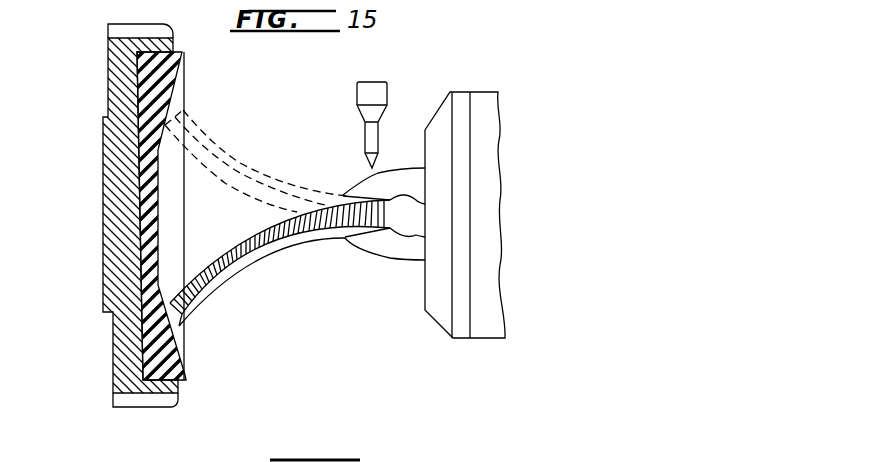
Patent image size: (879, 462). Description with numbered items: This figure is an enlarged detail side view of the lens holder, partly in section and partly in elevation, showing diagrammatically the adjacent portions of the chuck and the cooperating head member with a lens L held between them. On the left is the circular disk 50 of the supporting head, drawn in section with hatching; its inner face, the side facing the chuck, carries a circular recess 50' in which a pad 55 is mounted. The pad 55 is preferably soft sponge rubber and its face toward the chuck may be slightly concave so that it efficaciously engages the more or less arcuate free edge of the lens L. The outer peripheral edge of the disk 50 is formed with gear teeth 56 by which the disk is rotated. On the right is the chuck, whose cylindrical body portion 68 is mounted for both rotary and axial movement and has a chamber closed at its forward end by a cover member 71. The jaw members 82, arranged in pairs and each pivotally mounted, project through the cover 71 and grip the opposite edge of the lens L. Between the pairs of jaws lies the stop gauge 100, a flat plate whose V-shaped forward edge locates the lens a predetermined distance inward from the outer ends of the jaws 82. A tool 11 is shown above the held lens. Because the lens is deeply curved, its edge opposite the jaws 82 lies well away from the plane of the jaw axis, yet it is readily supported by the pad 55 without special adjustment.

The circular disk 50 is at (119, 208).
The circular recess 50' is at (123, 216).
The gear teeth 56 is at (130, 401).
The pad 55 is at (182, 369).
The leaf spring strip L is at (243, 229).
The stop gauge 100 is at (398, 220).
The jaw members 82 is at (417, 240).
The cylindrical body portion 68 is at (493, 307).
The cover member 71 is at (463, 323).
The tool 11 is at (382, 89).